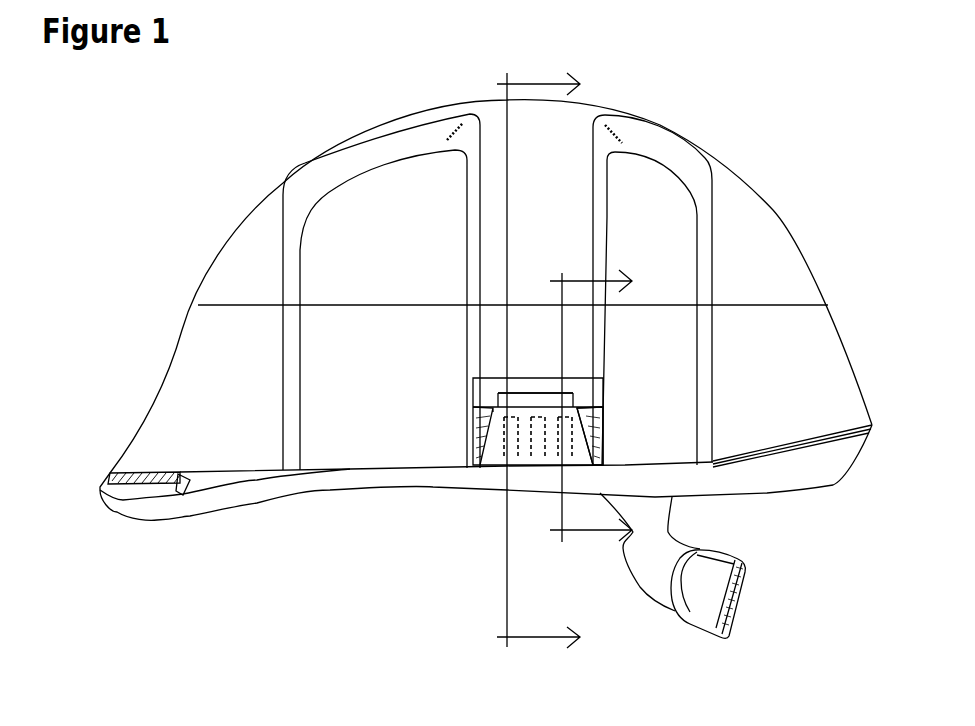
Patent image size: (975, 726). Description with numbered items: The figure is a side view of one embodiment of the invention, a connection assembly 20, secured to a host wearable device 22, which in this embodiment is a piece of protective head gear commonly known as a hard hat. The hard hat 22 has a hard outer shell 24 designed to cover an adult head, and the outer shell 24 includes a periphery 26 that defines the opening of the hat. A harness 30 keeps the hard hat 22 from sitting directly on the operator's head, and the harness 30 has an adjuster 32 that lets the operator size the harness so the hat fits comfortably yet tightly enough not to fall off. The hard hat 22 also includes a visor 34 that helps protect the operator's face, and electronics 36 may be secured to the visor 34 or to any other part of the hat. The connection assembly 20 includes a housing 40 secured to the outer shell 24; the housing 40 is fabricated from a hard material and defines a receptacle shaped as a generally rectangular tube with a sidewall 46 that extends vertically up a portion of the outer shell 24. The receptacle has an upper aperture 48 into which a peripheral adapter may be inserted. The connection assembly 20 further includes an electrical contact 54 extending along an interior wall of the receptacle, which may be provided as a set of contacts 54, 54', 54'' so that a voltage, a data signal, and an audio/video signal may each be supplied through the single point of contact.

The connection assembly 20 is at (470, 500).
The host wearable device 22 is at (213, 250).
The outer shell 24 is at (773, 210).
The periphery 26 is at (833, 485).
The harness 30 is at (634, 570).
The adjuster 32 is at (735, 612).
The visor 34 is at (97, 489).
The electronics 36 is at (162, 473).
The housing 40 is at (490, 412).
The sidewall 46 is at (587, 427).
The upper aperture 48 is at (580, 392).
The electrical contact 54 is at (488, 400).
The electrical contact 54' is at (539, 397).
The electrical contact 54'' is at (586, 394).